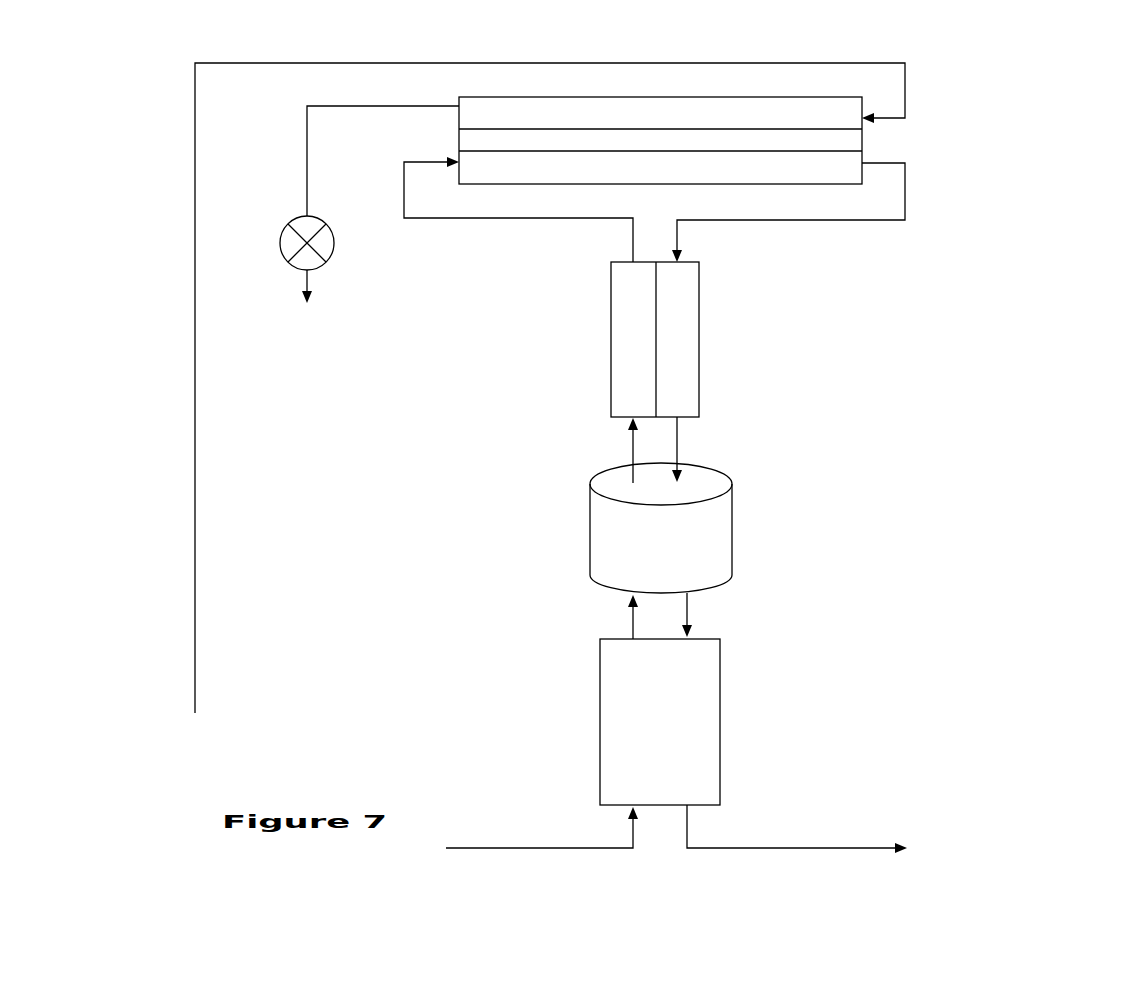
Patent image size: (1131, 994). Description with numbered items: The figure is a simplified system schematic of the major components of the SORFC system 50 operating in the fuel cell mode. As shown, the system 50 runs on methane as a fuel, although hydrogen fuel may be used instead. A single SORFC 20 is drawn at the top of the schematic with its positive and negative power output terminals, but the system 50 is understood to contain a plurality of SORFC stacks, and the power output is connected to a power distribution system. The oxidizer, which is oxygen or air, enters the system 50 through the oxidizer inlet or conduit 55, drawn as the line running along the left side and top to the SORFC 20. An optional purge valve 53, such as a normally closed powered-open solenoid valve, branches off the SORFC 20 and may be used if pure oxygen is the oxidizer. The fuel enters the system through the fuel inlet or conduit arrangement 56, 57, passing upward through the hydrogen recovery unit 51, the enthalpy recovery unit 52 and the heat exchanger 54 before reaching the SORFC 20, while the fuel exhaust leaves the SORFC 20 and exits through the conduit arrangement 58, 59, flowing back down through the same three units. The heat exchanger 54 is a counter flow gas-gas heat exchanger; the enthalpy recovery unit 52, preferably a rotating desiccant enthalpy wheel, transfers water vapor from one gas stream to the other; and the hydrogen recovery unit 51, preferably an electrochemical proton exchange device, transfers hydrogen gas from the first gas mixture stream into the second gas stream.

The SORFC 20 is at (828, 139).
The SORFC system 50 is at (1118, 403).
The hydrogen recovery unit 51 is at (698, 715).
The enthalpy recovery unit 52 is at (709, 525).
The purge valve 53 is at (334, 243).
The heat exchanger 54 is at (687, 328).
The oxidizer inlet 55 is at (195, 491).
The fuel inlet conduit 56 is at (536, 847).
The fuel inlet conduit 57 is at (480, 217).
The fuel exhaust conduit 58 is at (905, 195).
The fuel exhaust conduit 59 is at (808, 847).